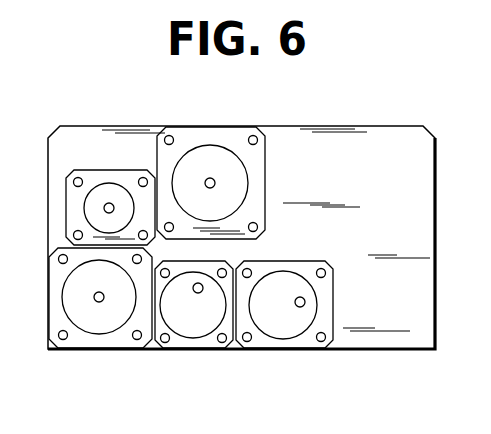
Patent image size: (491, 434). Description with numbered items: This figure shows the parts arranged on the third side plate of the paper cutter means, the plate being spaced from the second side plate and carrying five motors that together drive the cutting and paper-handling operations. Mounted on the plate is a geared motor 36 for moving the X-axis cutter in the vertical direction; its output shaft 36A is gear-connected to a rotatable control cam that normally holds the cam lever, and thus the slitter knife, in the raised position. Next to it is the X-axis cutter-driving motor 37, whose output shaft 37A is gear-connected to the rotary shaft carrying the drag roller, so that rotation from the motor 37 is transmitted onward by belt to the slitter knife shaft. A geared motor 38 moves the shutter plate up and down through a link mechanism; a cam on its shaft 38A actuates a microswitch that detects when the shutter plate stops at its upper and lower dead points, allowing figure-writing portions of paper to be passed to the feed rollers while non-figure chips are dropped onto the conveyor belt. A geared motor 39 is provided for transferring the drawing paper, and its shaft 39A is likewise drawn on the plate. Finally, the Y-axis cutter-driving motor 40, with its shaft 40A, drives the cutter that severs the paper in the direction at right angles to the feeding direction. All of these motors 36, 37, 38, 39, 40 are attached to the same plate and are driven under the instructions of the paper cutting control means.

The geared motor 36 is at (98, 182).
The output shaft 36A is at (109, 203).
The X-axis cutter-driving motor 37 is at (87, 318).
The output shaft 37A is at (100, 302).
The geared motor 38 is at (185, 325).
The shaft 38A is at (199, 293).
The geared motor 39 is at (277, 325).
The hole of mounting plate 39 39A is at (300, 307).
The Y-axis cutter-driving motor 40 is at (211, 163).
The center hole of mounting plate 40 40A is at (216, 180).